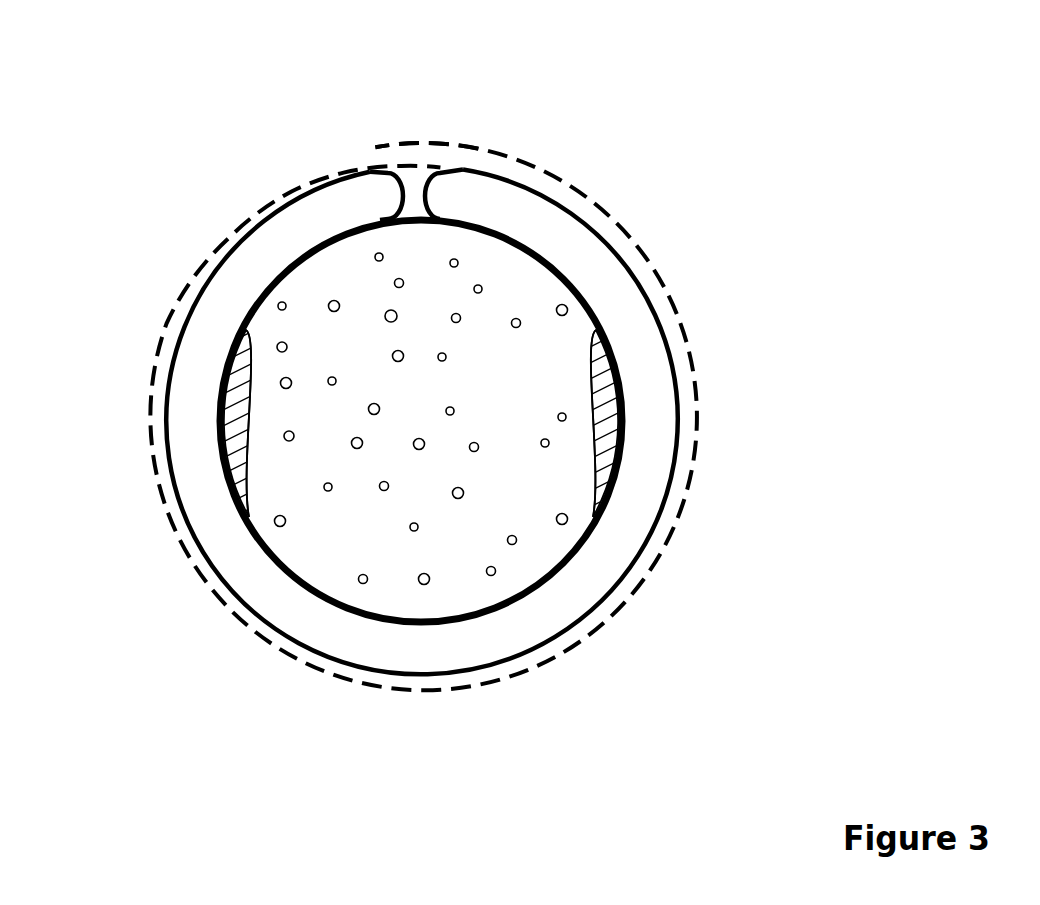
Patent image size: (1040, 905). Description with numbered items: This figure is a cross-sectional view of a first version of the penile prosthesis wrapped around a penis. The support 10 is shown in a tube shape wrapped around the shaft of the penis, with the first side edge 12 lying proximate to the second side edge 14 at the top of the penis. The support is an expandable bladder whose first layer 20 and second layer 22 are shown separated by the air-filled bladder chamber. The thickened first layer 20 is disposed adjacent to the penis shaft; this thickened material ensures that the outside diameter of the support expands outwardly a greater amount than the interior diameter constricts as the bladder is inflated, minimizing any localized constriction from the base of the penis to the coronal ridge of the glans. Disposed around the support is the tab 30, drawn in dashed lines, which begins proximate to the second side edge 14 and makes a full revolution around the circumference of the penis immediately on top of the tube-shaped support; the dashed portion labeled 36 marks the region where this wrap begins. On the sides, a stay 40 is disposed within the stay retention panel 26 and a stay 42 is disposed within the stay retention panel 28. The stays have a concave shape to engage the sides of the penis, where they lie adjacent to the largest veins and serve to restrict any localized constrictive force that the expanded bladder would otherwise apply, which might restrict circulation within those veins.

The support 10 is at (297, 615).
The first side edge 12 is at (397, 192).
The second side edge 14 is at (427, 200).
The first layer 20 is at (288, 565).
The second layer 22 is at (185, 565).
The stay retention panel 26 is at (250, 373).
The stay retention panel 28 is at (590, 388).
The tab 30 is at (213, 250).
The overlapping wrap edge 36 is at (373, 147).
The stay 40 is at (240, 476).
The stay 42 is at (600, 475).